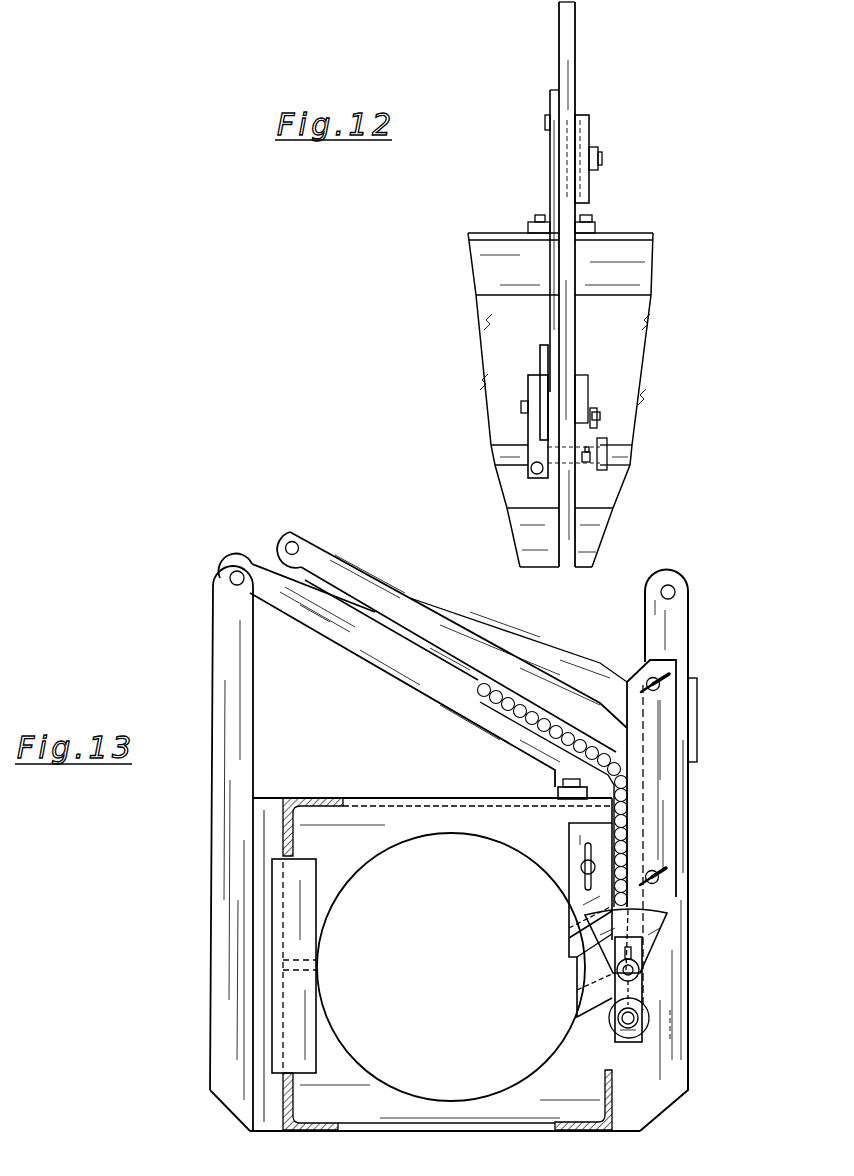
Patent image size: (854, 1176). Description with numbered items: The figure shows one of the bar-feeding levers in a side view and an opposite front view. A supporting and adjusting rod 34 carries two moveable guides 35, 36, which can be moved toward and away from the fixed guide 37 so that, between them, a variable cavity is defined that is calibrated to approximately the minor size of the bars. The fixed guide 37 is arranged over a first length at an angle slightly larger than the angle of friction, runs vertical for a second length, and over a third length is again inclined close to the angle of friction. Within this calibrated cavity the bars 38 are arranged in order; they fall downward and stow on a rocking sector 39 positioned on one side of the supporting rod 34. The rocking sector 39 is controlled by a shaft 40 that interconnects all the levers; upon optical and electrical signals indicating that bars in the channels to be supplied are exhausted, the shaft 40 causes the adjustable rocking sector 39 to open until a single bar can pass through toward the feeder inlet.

In FIG. 12, the supporting and adjusting rod 34 is at (560, 38).
In FIG. 13, the supporting and adjusting rod 34 is at (680, 625).
In FIG. 13, the moveable guide 35 is at (325, 557).
In FIG. 12, the moveable guide 36 is at (550, 160).
In FIG. 13, the moveable guide 36 is at (668, 833).
In FIG. 13, the fixed guide 37 is at (556, 776).
In FIG. 13, the bars 38 is at (497, 700).
In FIG. 12, the rocking sector 39 is at (540, 358).
In FIG. 13, the rocking sector 39 is at (648, 925).
In FIG. 12, the shaft 40 is at (528, 447).
In FIG. 13, the shaft 40 is at (641, 1022).